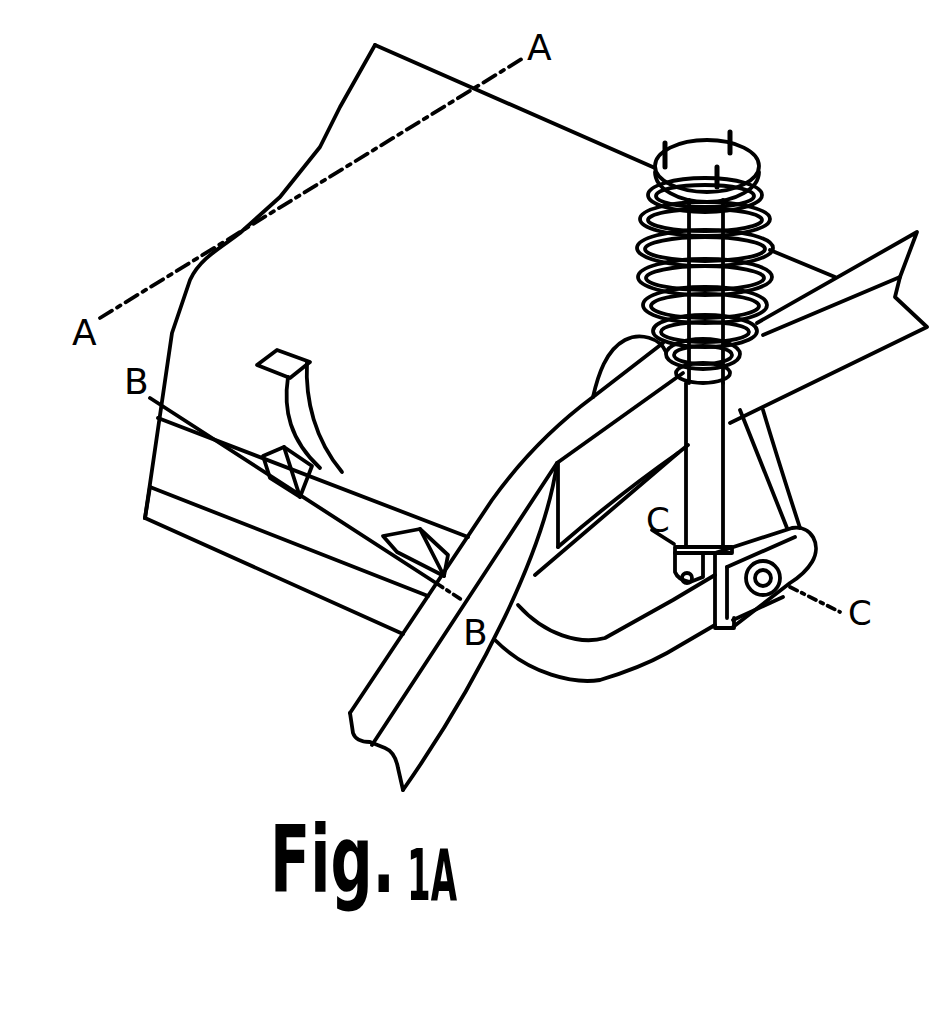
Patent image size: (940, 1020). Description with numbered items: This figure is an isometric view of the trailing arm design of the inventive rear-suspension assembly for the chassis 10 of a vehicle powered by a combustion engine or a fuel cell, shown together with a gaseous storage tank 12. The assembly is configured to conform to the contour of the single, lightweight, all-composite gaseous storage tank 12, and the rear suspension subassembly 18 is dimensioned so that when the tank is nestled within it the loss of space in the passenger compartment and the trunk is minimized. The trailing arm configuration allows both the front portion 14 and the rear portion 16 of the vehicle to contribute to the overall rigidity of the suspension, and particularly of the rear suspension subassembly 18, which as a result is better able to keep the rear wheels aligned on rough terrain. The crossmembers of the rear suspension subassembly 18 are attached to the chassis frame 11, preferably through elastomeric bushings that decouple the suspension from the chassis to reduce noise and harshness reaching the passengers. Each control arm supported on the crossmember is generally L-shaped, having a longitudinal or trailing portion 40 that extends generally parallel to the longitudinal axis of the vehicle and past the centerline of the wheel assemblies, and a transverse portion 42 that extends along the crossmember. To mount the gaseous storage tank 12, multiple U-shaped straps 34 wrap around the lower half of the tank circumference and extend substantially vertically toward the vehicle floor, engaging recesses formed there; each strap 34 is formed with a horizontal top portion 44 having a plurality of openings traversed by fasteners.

The chassis 10 is at (677, 108).
The chassis frame 11 is at (462, 705).
The gaseous storage tank 12 is at (530, 225).
The front portion 14 is at (306, 540).
The rear portion 16 is at (828, 237).
The rear suspension subassembly 18 is at (784, 519).
The U-shaped strap 34 is at (335, 415).
The longitudinal or trailing portion 40 is at (670, 658).
The transverse portion 42 is at (385, 500).
The horizontal top portion 44 is at (300, 345).